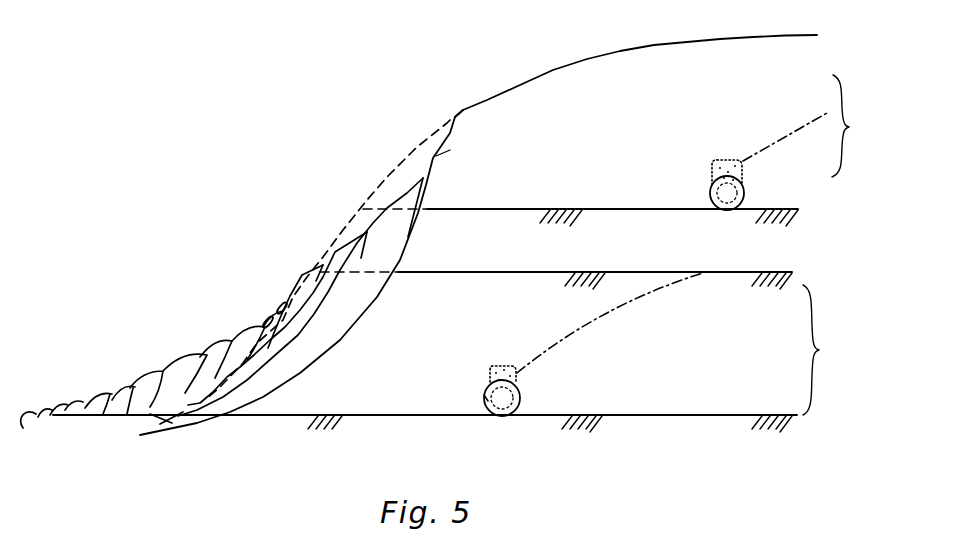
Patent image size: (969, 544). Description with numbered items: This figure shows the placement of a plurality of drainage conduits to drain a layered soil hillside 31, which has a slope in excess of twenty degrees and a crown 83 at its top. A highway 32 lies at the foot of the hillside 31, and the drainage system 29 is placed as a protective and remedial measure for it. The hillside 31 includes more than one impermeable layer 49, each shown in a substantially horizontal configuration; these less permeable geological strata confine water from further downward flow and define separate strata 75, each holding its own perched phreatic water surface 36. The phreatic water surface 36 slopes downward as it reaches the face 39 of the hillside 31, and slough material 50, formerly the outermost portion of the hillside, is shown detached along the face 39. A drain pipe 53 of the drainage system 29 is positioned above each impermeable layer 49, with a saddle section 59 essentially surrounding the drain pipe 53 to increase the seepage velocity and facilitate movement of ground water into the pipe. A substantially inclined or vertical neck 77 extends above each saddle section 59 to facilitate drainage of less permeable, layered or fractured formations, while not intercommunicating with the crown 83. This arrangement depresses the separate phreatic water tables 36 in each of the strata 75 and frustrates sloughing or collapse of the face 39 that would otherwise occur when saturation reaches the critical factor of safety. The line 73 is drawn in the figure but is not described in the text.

The crown of the hillside 83 is at (687, 40).
The hillside 31 is at (482, 100).
The strata 75 is at (443, 152).
The face of the hillside 39 is at (368, 190).
The slough material 50 is at (299, 292).
The highway 32 is at (103, 408).
The impermeable layer 49 is at (508, 208).
The neck 77 is at (713, 164).
The drain pipe 53 is at (710, 193).
The drainage system 29 is at (745, 183).
The travel path 73 is at (782, 137).
The phreatic water surface 36 is at (608, 316).
The saddle section 59 is at (483, 397).